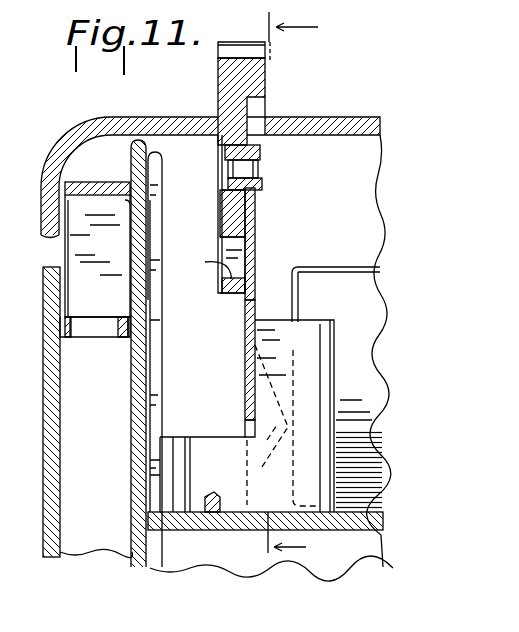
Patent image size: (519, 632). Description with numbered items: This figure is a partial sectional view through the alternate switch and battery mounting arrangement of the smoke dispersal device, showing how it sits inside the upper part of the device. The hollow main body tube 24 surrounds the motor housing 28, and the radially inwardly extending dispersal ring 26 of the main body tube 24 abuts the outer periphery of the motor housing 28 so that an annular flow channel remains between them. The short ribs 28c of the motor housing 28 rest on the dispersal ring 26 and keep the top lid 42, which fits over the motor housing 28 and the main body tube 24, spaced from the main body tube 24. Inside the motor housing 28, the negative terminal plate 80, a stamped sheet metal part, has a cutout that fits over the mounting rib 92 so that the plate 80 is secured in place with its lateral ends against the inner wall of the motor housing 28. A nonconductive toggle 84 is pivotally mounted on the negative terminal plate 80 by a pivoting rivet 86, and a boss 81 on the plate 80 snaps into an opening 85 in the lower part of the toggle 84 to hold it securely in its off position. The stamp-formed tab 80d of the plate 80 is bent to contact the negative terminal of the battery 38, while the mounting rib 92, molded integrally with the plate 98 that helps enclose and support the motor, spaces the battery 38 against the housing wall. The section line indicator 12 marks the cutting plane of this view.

The cigarette 12 is at (310, 289).
The main body tube 24 is at (45, 521).
The dispersal ring 26 is at (84, 332).
The motor housing 28 is at (133, 513).
The short ribs 28c is at (78, 272).
The battery 38 is at (368, 345).
The top lid 42 is at (84, 128).
The negative terminal plate 80 is at (246, 337).
The stamp-formed tab 80d is at (250, 397).
The boss 81 is at (250, 258).
The toggle 84 is at (256, 77).
The opening 85 is at (200, 284).
The pivoting rivet 86 is at (258, 155).
The mounting rib 92 is at (305, 457).
The plate 98 is at (218, 526).